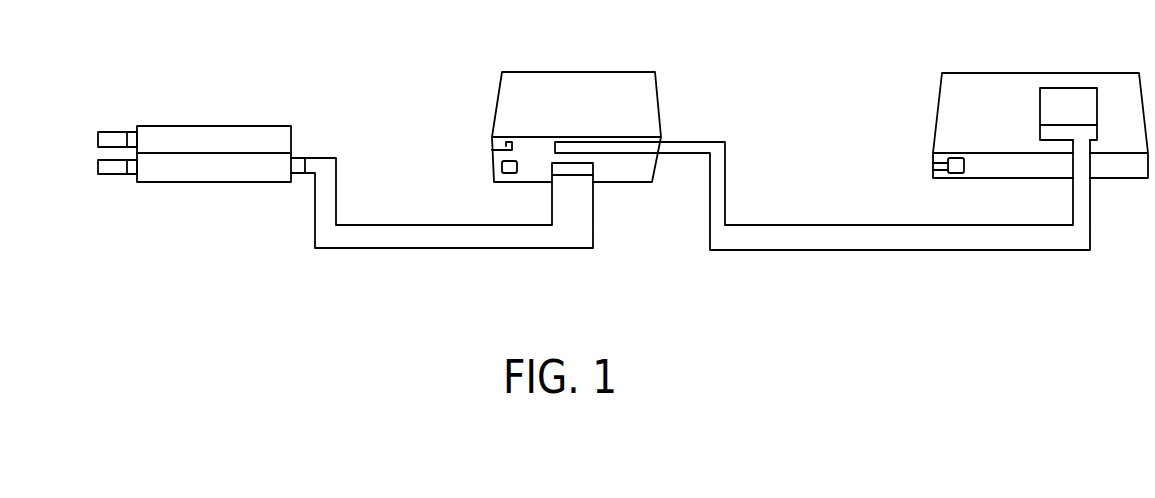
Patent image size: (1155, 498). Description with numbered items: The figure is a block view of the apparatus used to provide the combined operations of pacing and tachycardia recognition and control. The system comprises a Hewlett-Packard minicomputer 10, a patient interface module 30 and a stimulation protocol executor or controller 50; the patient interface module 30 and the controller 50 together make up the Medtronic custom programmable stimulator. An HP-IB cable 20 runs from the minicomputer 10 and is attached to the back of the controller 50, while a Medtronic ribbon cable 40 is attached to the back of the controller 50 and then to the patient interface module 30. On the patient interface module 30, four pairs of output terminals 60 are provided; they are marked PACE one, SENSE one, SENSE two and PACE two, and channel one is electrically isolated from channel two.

The minicomputer 10 is at (1018, 69).
The HP-IB cable 20 is at (884, 251).
The patient interface module 30 is at (186, 122).
The ribbon cable 40 is at (400, 251).
The stimulation protocol executor 50 is at (568, 71).
The output terminals 60 is at (97, 184).